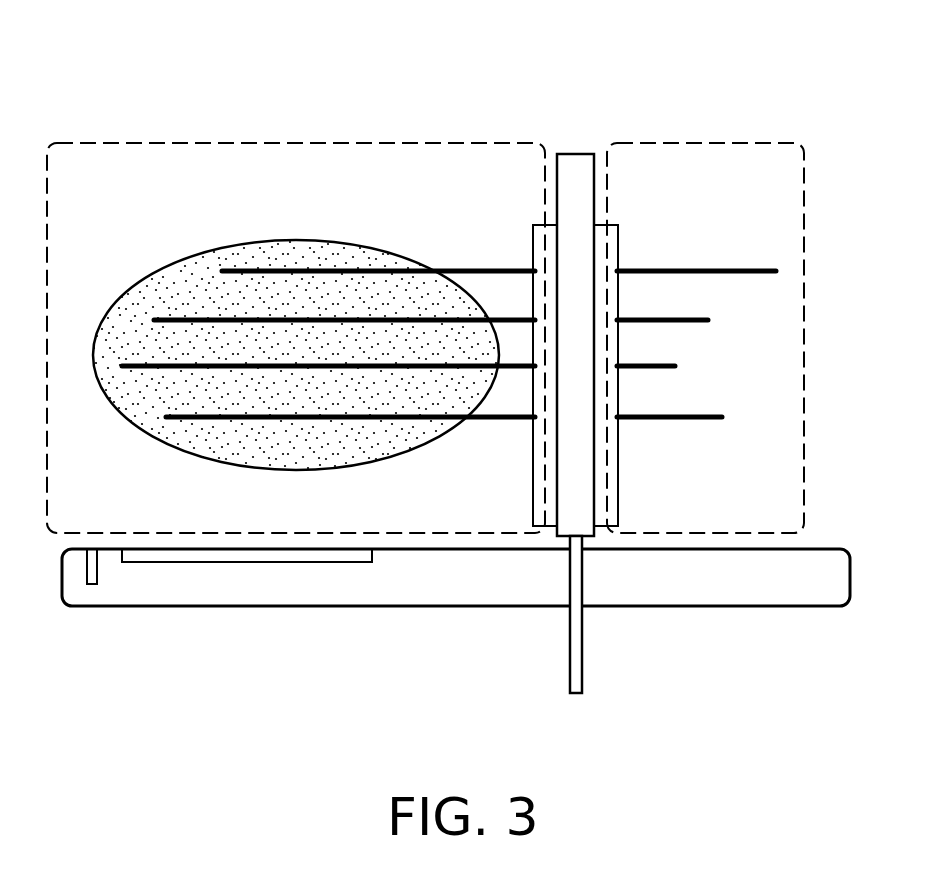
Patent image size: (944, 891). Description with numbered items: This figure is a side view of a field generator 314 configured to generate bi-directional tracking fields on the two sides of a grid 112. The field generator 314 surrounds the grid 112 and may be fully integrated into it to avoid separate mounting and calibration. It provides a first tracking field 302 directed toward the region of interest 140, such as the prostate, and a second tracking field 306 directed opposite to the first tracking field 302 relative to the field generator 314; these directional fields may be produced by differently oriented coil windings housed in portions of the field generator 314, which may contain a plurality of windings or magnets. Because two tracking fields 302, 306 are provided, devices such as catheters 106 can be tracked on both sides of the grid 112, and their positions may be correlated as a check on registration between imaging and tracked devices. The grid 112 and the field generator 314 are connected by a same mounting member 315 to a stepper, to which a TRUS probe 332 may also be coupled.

The first tracking field 302 is at (458, 142).
The second tracking field 306 is at (675, 142).
The region of interest 140 is at (300, 240).
The catheter 106 is at (143, 365).
The grid 112 is at (620, 247).
The field generator 314 is at (574, 153).
The mounting member 315 is at (569, 643).
The TRUS probe 332 is at (716, 607).